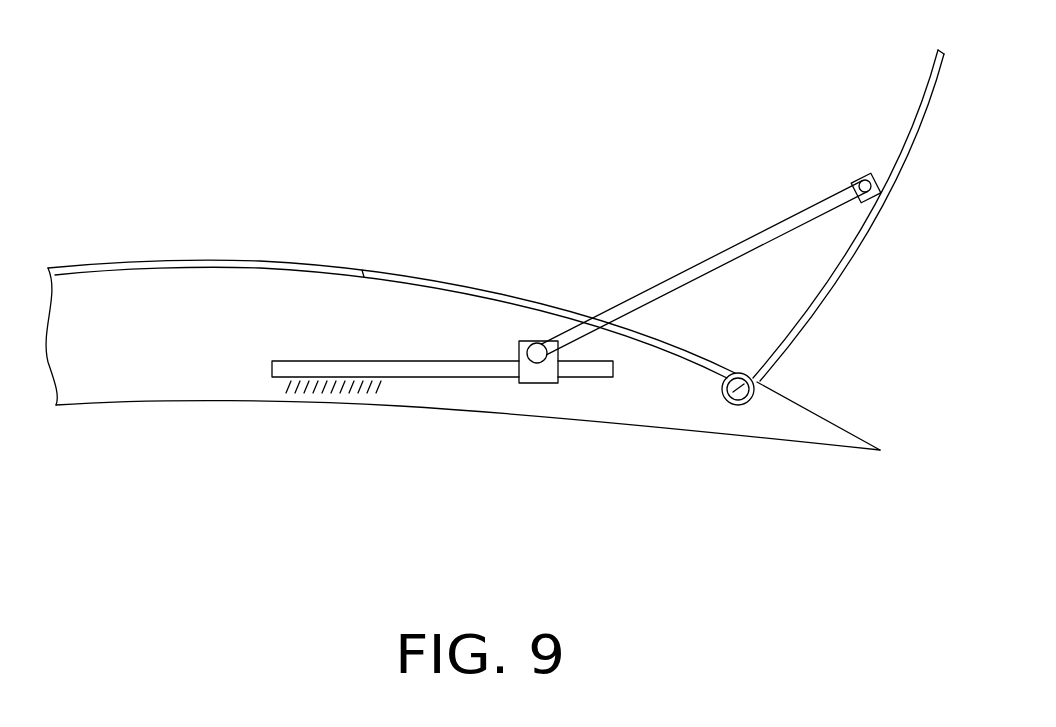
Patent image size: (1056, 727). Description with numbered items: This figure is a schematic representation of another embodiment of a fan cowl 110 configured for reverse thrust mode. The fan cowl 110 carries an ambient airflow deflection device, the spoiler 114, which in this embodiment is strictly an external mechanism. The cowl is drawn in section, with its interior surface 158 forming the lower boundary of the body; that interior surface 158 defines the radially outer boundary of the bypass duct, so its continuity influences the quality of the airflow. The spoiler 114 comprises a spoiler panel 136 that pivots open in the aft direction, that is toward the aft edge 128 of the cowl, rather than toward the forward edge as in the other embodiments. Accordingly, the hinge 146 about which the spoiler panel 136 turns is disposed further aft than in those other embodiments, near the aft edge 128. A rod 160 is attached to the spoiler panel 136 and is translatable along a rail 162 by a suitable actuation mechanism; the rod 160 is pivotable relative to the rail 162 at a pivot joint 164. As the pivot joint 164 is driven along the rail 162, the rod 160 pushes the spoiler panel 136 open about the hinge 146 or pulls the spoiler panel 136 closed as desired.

The fan cowl 110 is at (233, 260).
The spoiler 114 is at (622, 74).
The aft edge 128 is at (880, 450).
The spoiler panel 136 is at (921, 103).
The hinge 146 is at (720, 398).
The interior surface 158 is at (507, 413).
The rod 160 is at (770, 226).
The rail 162 is at (353, 358).
The pivot joint 164 is at (539, 348).